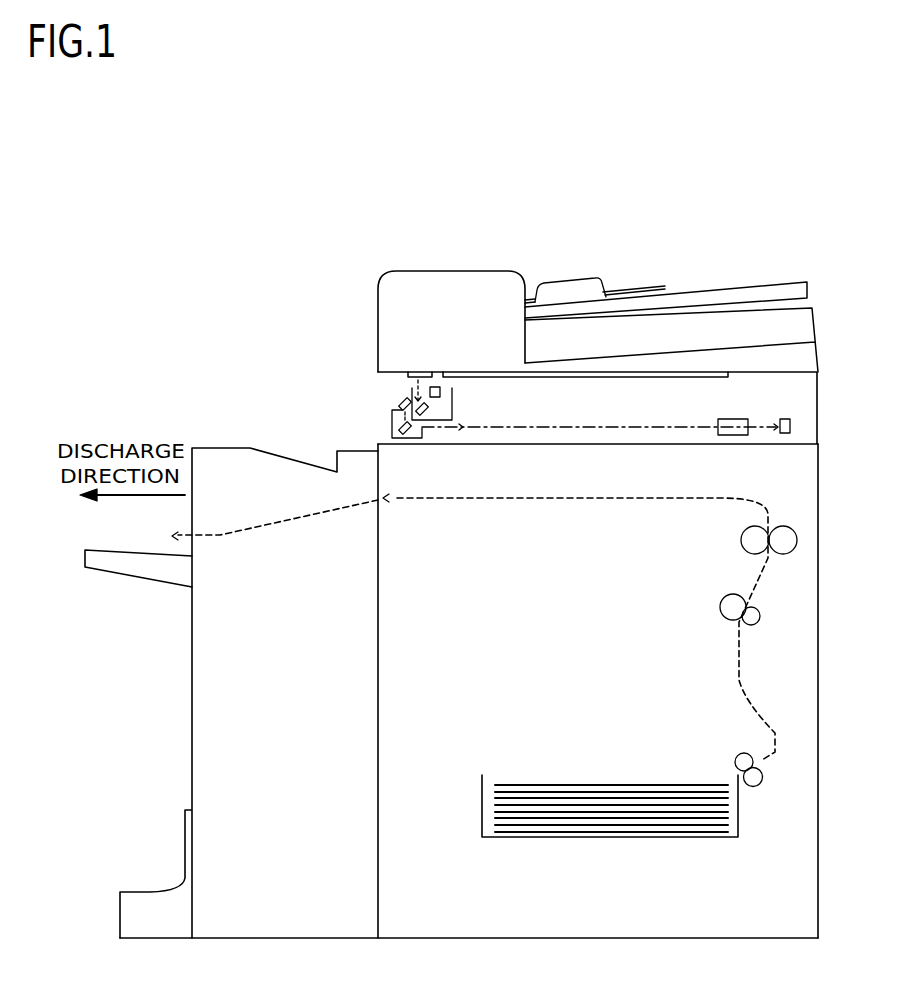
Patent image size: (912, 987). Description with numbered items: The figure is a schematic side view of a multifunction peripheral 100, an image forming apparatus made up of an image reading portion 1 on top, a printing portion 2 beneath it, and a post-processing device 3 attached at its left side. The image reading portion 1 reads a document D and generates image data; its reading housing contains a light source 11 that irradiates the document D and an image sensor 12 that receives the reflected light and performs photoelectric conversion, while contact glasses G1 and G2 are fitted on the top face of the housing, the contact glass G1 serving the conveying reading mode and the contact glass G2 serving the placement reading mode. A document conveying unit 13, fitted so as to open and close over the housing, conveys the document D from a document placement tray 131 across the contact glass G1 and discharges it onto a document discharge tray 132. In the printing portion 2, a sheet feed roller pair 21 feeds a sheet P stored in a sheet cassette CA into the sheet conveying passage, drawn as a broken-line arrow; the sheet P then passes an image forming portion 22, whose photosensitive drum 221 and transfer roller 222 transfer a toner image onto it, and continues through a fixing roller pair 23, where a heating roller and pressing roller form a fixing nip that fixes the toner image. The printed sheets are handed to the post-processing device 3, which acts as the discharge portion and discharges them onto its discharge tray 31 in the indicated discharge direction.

The multifunction peripheral 100 is at (362, 254).
The document conveying unit 13 is at (508, 270).
The document D is at (657, 285).
The document placement tray 131 is at (771, 282).
The document discharge tray 132 is at (671, 352).
The image reading portion 1 is at (805, 398).
The contact glass G1 is at (408, 377).
The contact glass G2 is at (664, 376).
The light source 11 is at (440, 391).
The image sensor 12 is at (784, 418).
The printing portion 2 is at (807, 493).
The fixing roller pair 23 is at (748, 537).
The image forming portion 22 is at (730, 618).
The photosensitive drum 221 is at (727, 600).
The transfer roller 222 is at (758, 620).
The sheet feed roller pair 21 is at (741, 758).
The sheet P is at (572, 783).
The sheet cassette CA is at (482, 795).
The post-processing device 3 is at (206, 646).
The discharge tray 31 is at (102, 550).